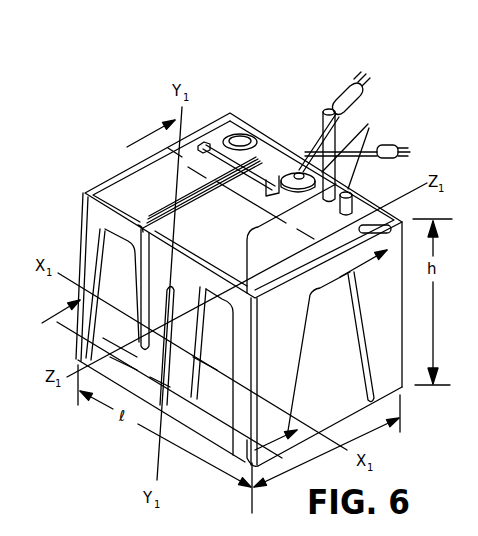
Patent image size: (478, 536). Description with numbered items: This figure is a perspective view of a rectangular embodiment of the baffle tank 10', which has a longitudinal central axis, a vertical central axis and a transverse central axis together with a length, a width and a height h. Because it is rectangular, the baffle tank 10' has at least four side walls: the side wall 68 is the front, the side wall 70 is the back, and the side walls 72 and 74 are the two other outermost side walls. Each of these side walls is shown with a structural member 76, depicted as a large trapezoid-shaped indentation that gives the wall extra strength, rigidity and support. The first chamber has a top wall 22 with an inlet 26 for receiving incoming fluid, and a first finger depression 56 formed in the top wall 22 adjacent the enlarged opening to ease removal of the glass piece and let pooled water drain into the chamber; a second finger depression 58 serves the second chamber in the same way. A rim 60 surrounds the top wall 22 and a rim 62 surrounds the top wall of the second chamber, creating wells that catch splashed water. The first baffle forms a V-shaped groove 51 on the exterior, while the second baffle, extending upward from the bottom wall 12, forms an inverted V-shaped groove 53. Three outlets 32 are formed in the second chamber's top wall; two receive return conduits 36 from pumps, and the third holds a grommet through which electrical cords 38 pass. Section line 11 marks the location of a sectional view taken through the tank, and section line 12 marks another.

The baffle tank 10' is at (264, 157).
The section line 11- 11 is at (169, 370).
The bottom wall 12 is at (221, 502).
The top wall 22 is at (270, 148).
The inlet 26 is at (240, 134).
The outlets 32 is at (355, 149).
The return conduits 36 is at (302, 158).
The electrical cords 38 is at (314, 110).
The V-shaped groove 51 is at (298, 136).
The inverted V-shaped groove 53 is at (166, 437).
The first finger depression 56 is at (206, 142).
The second finger depression 58 is at (391, 229).
The rim 60 is at (98, 182).
The rim 62 is at (404, 216).
The side wall 68 is at (82, 243).
The side wall 70 is at (372, 197).
The side wall 72 is at (394, 314).
The side wall 74 is at (122, 172).
The structural members 76 is at (124, 274).